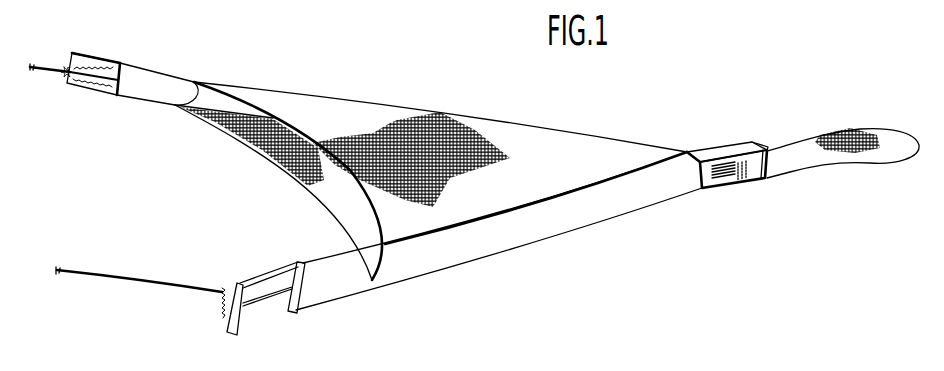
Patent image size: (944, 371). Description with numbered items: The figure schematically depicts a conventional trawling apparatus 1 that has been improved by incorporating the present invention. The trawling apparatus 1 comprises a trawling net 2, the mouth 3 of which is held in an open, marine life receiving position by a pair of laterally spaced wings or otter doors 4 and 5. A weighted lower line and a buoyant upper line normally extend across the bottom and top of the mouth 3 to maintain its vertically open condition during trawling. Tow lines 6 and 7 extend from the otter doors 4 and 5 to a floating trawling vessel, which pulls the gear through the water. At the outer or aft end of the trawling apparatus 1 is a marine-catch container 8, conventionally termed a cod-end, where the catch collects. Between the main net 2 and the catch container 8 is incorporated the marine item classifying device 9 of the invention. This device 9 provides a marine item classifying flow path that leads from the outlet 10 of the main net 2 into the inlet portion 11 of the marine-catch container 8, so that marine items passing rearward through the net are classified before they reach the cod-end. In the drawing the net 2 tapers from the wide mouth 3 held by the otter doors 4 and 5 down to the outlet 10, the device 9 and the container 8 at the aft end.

The trawling apparatus 1 is at (500, 121).
The trawling net 2 is at (545, 229).
The mouth 3 is at (250, 138).
The otter door 4 is at (278, 305).
The otter door 5 is at (100, 96).
The tow line 6 is at (147, 283).
The tow line 7 is at (53, 72).
The marine-catch container 8 is at (800, 143).
The marine item classifying device 9 is at (723, 150).
The outlet 10 is at (700, 190).
The inlet portion 11 is at (767, 178).